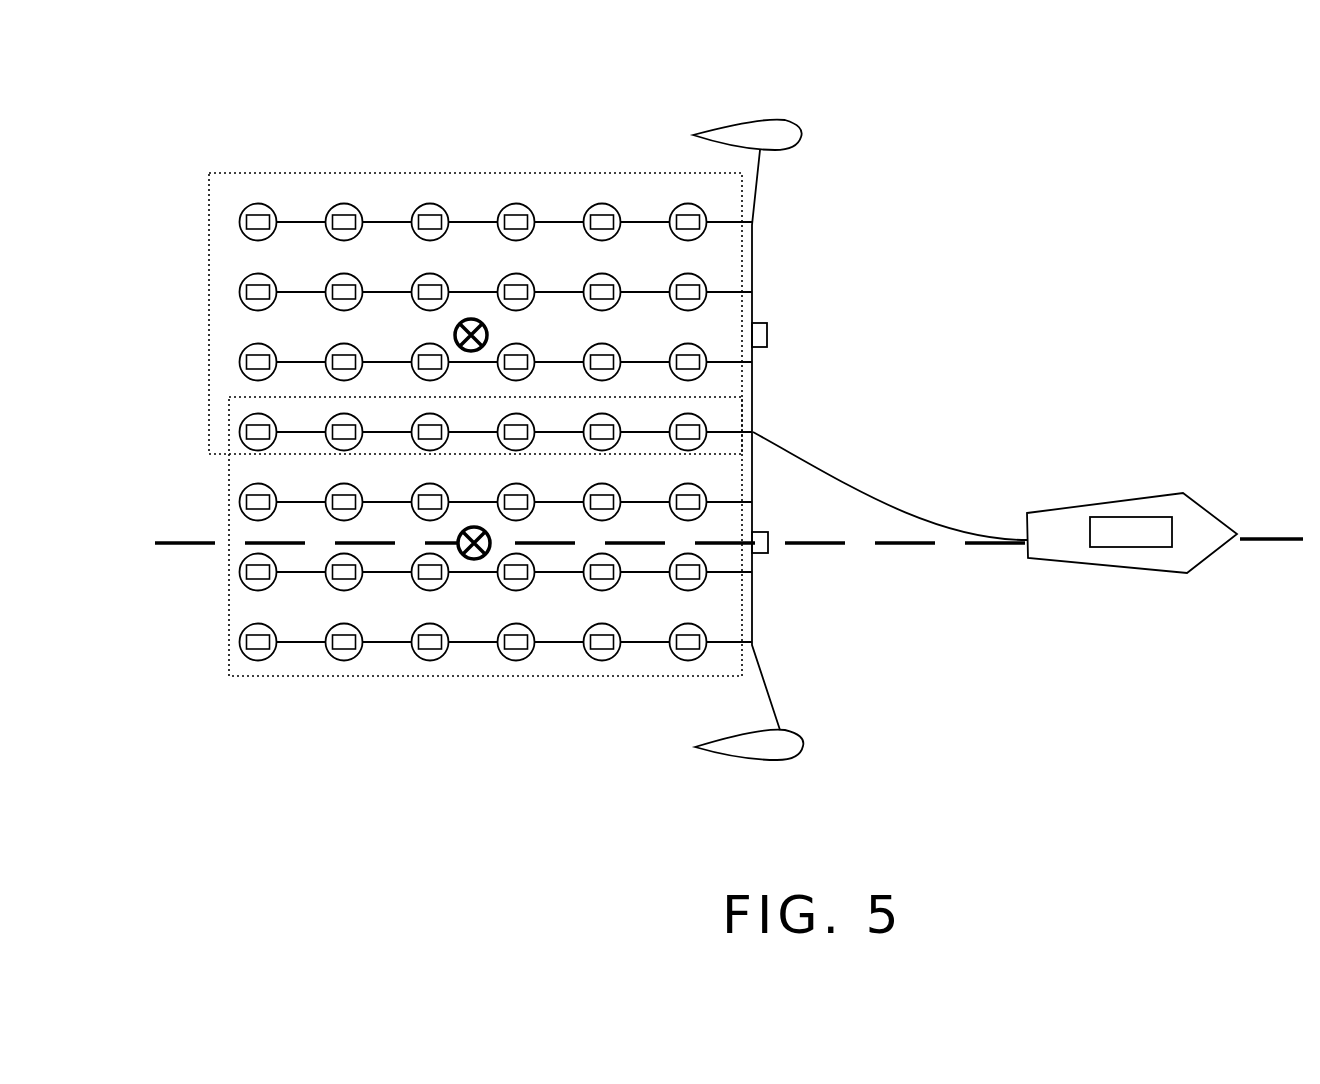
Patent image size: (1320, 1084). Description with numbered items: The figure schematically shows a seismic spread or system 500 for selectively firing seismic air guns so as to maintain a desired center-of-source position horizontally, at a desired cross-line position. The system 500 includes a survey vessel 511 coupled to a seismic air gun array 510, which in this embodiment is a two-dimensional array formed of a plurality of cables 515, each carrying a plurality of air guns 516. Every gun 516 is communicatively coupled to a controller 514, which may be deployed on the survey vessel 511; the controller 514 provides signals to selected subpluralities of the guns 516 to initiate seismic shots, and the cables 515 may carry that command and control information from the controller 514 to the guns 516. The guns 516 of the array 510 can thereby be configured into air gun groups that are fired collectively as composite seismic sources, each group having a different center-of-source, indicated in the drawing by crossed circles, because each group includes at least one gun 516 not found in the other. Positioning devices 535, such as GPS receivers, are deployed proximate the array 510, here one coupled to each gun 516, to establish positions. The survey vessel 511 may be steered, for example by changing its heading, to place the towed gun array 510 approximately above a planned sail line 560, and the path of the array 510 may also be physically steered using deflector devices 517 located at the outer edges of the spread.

The seismic spread or system 500 is at (990, 168).
The seismic air gun array 510 is at (473, 783).
The survey vessel 511 is at (1100, 502).
The controller 514 is at (1130, 517).
The cables 515 is at (388, 222).
The air guns 516 is at (515, 208).
The deflector devices 517 is at (790, 120).
The positioning devices 535 is at (430, 222).
The sail line 560 is at (1276, 541).